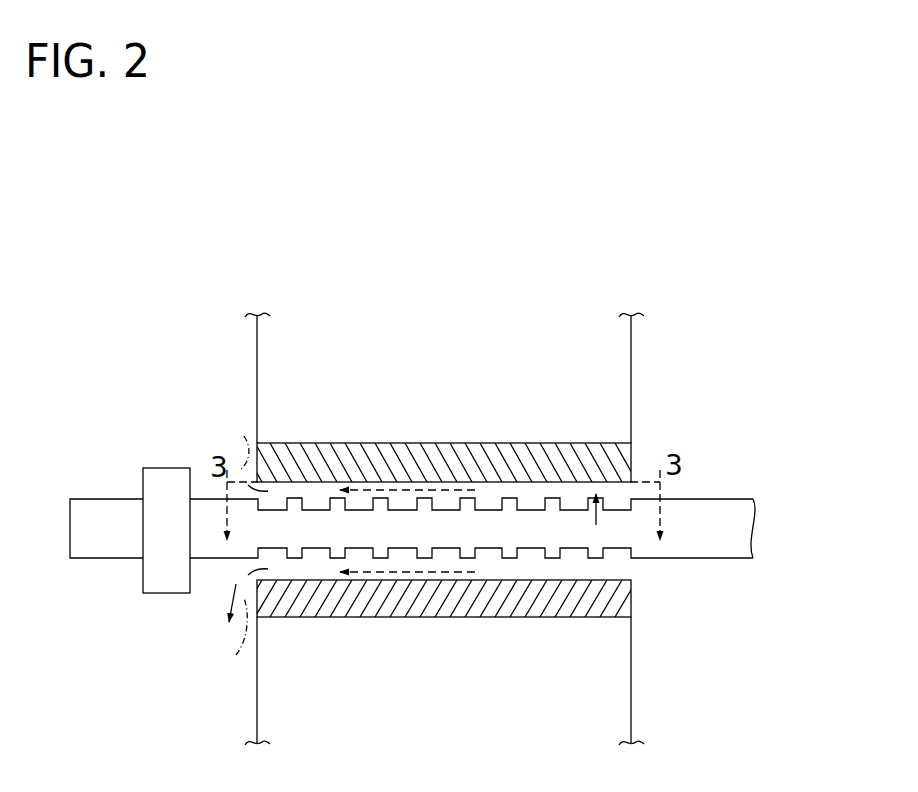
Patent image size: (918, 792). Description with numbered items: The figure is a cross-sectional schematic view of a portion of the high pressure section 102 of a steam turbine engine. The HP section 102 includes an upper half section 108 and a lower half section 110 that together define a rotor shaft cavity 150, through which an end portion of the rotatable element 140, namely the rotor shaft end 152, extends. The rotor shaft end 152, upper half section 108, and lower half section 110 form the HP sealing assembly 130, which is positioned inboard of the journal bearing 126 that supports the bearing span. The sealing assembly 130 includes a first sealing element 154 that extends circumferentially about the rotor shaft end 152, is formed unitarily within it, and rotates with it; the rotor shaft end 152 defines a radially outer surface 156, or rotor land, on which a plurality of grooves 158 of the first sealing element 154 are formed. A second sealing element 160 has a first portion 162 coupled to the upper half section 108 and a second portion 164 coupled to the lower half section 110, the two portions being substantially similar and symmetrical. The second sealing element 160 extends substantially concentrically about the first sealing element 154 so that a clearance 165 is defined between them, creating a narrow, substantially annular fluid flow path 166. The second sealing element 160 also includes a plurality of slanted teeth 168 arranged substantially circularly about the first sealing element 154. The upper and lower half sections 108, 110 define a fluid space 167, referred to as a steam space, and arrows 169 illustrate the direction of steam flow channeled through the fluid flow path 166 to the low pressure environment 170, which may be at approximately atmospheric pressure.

The high pressure (HP) section 102 is at (208, 188).
The upper half section 108 is at (464, 340).
The lower half section 110 is at (462, 713).
The journal bearing 126 is at (150, 480).
The high pressure (HP) sealing assembly 130 is at (304, 258).
The rotatable element 140 is at (768, 527).
The rotor shaft cavity 150 is at (645, 606).
The rotor shaft end 152 is at (213, 573).
The first sealing element 154 is at (439, 541).
The radially outer surface 156 is at (208, 498).
The grooves 158 is at (400, 488).
The second sealing element 160 is at (438, 541).
The first portion 162 is at (412, 445).
The second portion 164 is at (398, 618).
The clearance 165 is at (597, 462).
The fluid flow path 166 is at (551, 488).
The fluid space 167 is at (787, 333).
The slanted teeth 168 is at (477, 492).
The arrows 169 is at (229, 452).
The low pressure environment 170 is at (185, 318).